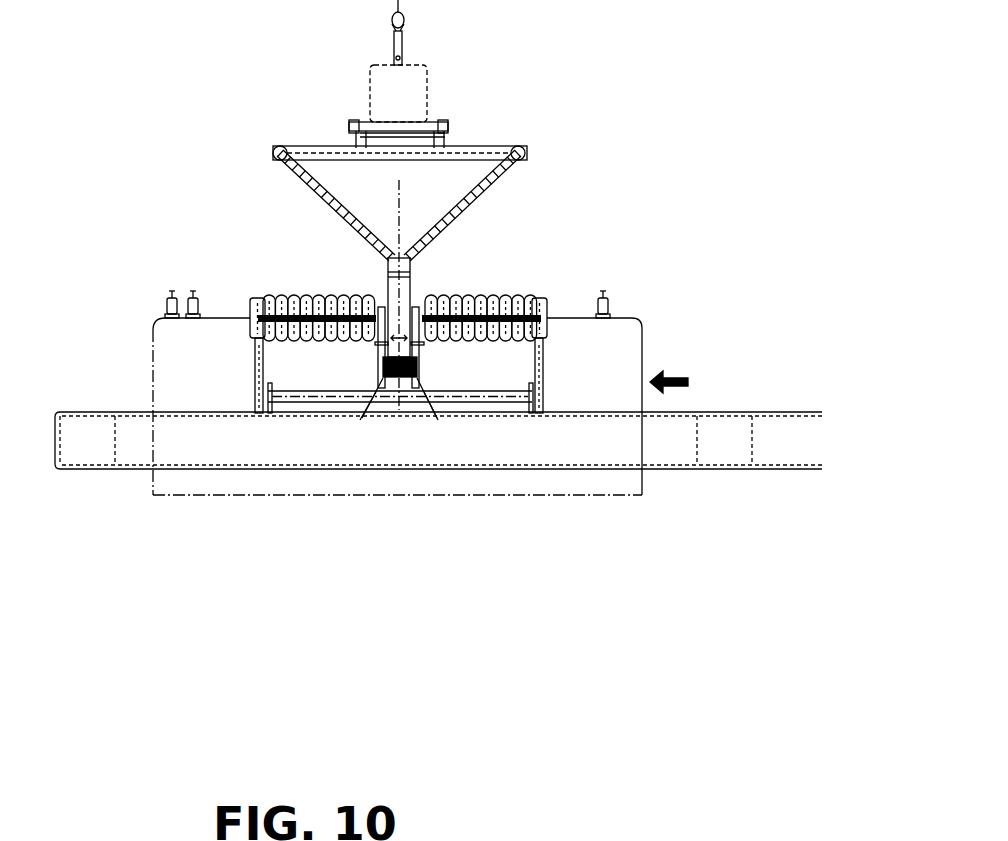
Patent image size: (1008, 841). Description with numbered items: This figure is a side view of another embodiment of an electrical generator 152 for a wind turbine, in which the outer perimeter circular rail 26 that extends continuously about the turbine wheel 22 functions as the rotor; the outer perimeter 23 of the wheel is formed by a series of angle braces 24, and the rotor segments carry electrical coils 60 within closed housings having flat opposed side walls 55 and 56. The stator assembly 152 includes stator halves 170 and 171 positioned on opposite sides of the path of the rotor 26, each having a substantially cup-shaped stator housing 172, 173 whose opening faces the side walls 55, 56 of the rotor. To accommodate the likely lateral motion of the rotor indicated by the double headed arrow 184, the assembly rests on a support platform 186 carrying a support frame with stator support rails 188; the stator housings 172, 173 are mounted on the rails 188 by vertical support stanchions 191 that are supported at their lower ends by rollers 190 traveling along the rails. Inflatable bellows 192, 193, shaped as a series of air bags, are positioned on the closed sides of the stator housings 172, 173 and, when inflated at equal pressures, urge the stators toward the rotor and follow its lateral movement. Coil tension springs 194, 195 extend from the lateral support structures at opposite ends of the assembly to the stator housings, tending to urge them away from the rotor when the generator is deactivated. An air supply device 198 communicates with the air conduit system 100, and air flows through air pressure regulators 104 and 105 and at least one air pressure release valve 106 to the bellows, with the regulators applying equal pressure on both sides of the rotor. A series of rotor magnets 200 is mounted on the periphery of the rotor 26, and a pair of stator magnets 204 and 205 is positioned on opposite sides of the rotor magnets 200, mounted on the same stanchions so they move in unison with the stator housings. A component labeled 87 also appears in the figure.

The turbine wheel 22 is at (448, 60).
The outer perimeter 23 is at (500, 178).
The angle braces 24 is at (478, 193).
The double headed arrow 184 is at (480, 190).
The electrical generator 152 is at (299, 206).
The side wall 55 is at (388, 287).
The side wall 56 is at (408, 290).
The electrical coils 60 is at (390, 280).
The outer perimeter circular rail 26 is at (402, 301).
The stator housing 172 is at (373, 293).
The stator housing 173 is at (428, 293).
The inflatable bellows 193 is at (517, 295).
The coil tension spring 195 is at (548, 298).
The coil tension spring 194 is at (263, 303).
The inflatable bellows 192 is at (283, 302).
The valve 87 is at (250, 298).
The air pressure regulator 104 is at (188, 302).
The air pressure release valve 106 is at (167, 303).
The air pressure regulator 105 is at (612, 305).
The air conduit system 100 is at (650, 325).
The air supply device 198 is at (682, 375).
The support platform 186 is at (787, 410).
The stator support rails 188 is at (508, 392).
The stator half 170 is at (378, 345).
The stator half 171 is at (421, 345).
The vertical support stanchions 191 is at (378, 363).
The rotor magnets 200 is at (400, 380).
The rollers 190 is at (384, 380).
The stator magnet 204 is at (378, 392).
The stator magnet 205 is at (422, 392).